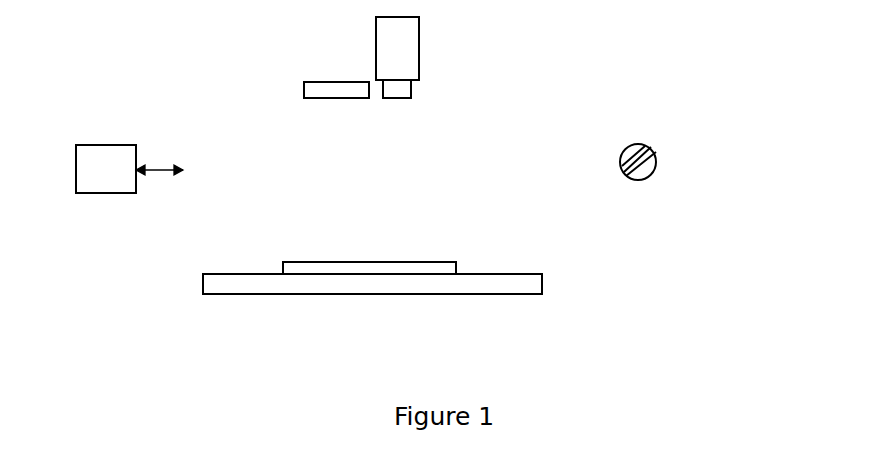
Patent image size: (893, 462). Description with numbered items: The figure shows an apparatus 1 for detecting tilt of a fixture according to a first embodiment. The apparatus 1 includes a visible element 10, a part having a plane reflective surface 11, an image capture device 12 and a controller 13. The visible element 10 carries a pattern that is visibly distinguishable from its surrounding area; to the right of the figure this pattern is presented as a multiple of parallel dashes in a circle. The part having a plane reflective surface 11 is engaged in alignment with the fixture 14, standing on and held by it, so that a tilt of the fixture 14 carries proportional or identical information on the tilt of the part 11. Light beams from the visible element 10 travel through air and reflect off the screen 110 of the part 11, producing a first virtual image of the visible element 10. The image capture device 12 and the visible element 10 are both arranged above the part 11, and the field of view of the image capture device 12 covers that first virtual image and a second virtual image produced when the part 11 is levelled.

The apparatus 1 is at (550, 318).
The visible element 10 is at (310, 88).
The part having a plane reflective surface 11 is at (447, 268).
The image capture device 12 is at (412, 55).
The controller 13 is at (129, 169).
The fixture 14 is at (535, 282).
The screen 110 is at (312, 262).
The element pattern is at (655, 150).